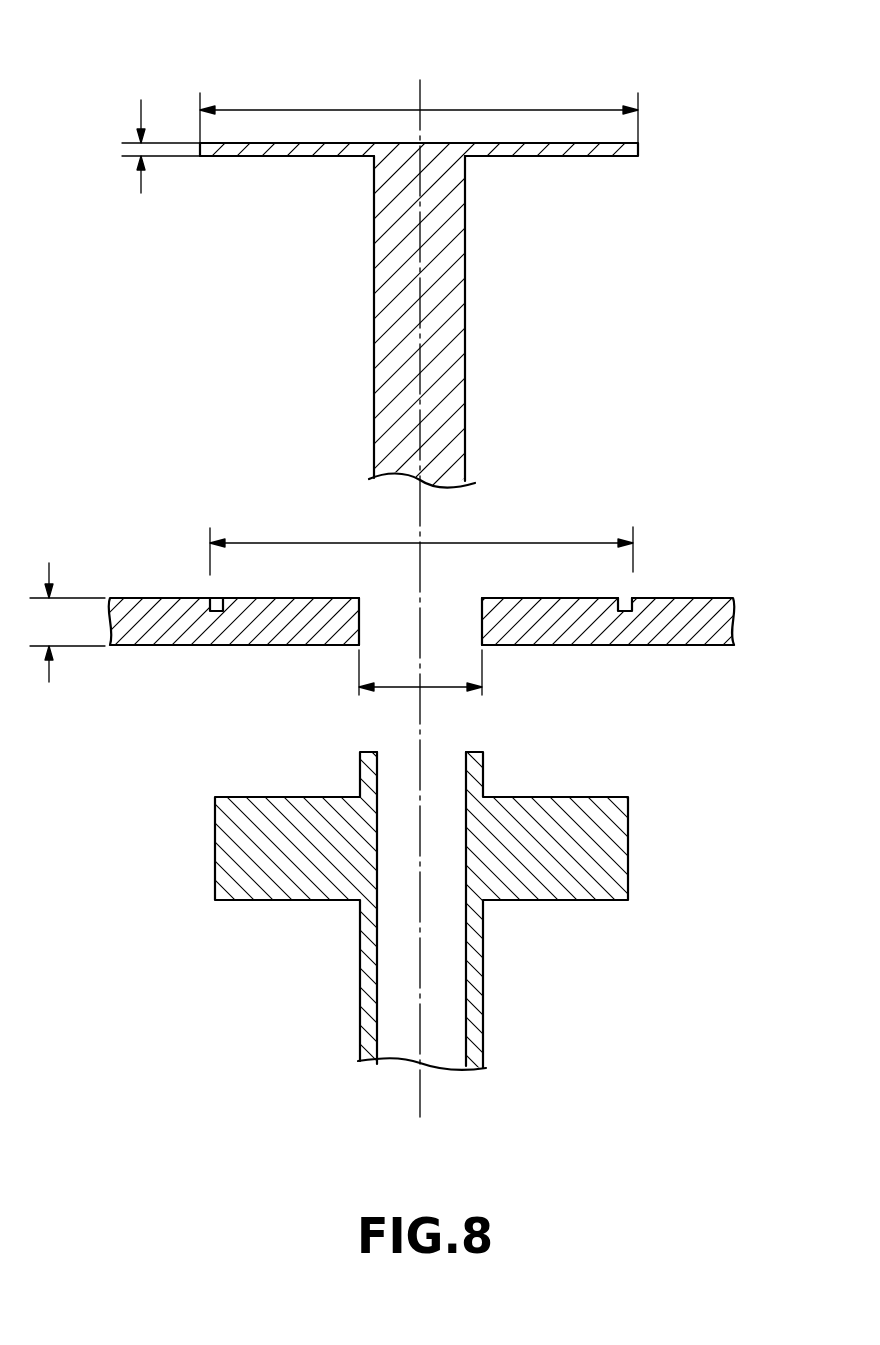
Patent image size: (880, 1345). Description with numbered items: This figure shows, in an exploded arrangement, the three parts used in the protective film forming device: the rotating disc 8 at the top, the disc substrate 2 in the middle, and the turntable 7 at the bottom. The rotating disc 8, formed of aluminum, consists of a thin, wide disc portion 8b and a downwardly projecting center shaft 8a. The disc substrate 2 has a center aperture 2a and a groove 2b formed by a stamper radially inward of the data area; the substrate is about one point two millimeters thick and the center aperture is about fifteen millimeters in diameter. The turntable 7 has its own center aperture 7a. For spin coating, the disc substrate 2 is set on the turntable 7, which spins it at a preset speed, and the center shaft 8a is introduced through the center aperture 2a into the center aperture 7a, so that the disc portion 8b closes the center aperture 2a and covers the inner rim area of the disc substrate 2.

The rotating disc 8 is at (440, 247).
The center shaft 8a is at (452, 361).
The disc portion 8b is at (557, 152).
The disc substrate 2 is at (400, 609).
The center aperture 2a is at (387, 620).
The groove 2b is at (213, 597).
The turntable 7 is at (440, 891).
The center aperture 7a is at (440, 805).